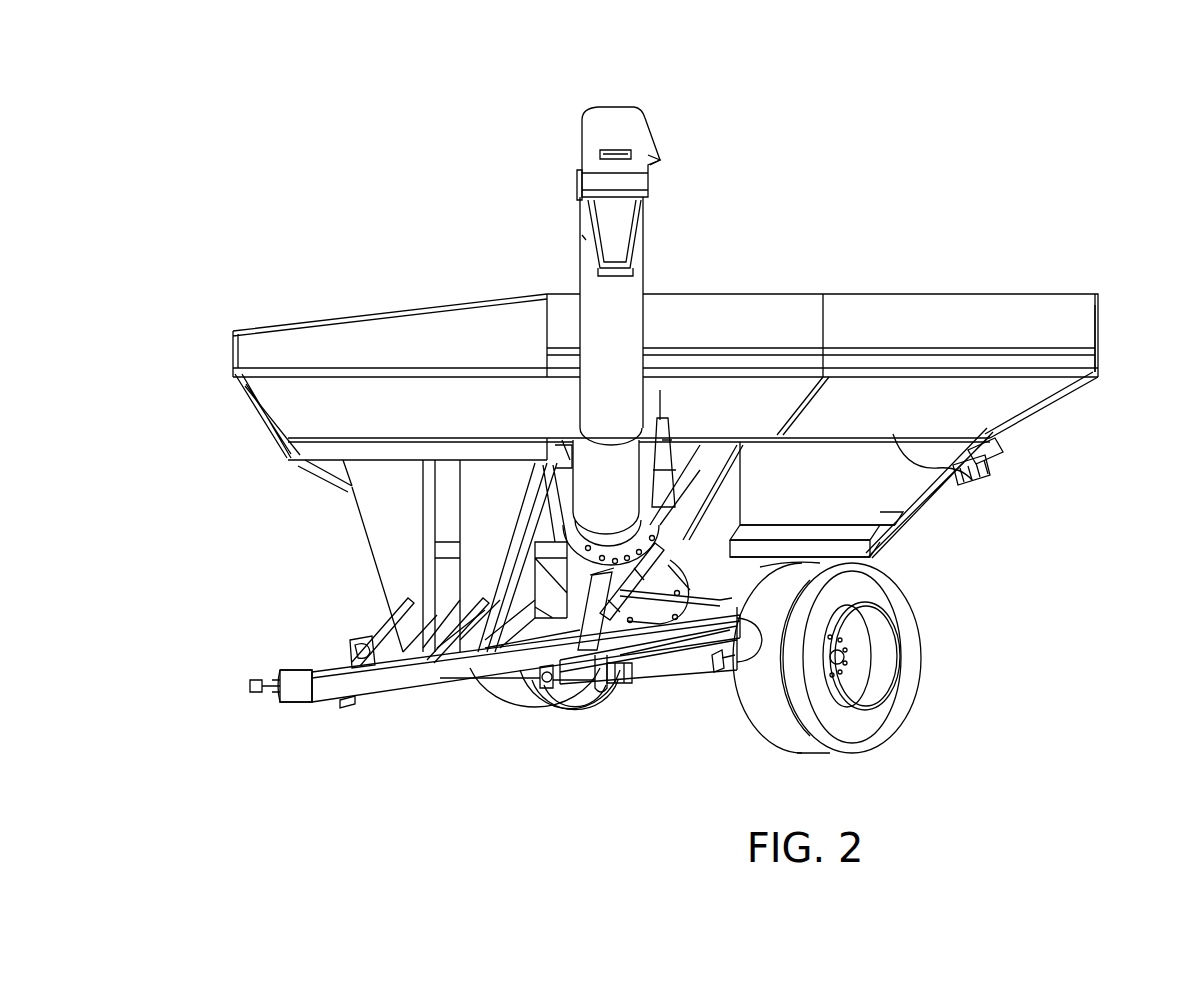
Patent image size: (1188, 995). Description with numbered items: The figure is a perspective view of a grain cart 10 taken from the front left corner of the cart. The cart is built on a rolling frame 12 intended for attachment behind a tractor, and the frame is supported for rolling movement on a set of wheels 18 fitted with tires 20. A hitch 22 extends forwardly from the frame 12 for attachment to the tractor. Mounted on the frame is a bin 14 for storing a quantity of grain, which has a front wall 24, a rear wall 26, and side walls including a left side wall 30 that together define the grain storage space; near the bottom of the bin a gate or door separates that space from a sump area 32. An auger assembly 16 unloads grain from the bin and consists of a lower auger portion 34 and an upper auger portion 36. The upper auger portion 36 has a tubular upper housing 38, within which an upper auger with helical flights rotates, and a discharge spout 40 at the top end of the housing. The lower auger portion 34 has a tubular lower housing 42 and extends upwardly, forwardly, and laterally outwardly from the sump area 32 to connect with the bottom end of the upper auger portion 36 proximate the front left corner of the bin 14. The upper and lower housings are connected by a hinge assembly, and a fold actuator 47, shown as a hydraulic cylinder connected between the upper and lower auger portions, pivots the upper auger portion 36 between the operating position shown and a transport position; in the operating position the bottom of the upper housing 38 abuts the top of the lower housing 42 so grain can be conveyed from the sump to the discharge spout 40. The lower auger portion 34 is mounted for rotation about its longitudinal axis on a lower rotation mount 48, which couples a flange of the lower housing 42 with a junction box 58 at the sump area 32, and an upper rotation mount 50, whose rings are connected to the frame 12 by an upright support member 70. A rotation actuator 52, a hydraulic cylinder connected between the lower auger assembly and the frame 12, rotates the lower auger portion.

The grain cart 10 is at (1056, 126).
The rolling frame 12 is at (395, 710).
The bin 14 is at (1090, 285).
The auger assembly 16 is at (582, 336).
The wheels 18 is at (878, 660).
The tires 20 is at (478, 725).
The hitch 22 is at (262, 668).
The front wall 24 is at (337, 404).
The rear wall 26 is at (1097, 325).
The left side wall 30 is at (978, 482).
The sump area 32 is at (690, 694).
The lower auger portion 34 is at (800, 545).
The upper auger portion 36 is at (568, 252).
The tubular upper housing 38 is at (580, 325).
The discharge spout 40 is at (650, 190).
The tubular lower housing 42 is at (692, 560).
The fold actuator 47 is at (678, 500).
The lower rotation mount 48 is at (706, 597).
The upper rotation mount 50 is at (676, 527).
The rotation actuator 52 is at (613, 675).
The junction box 58 is at (722, 675).
The support member 70 is at (580, 640).